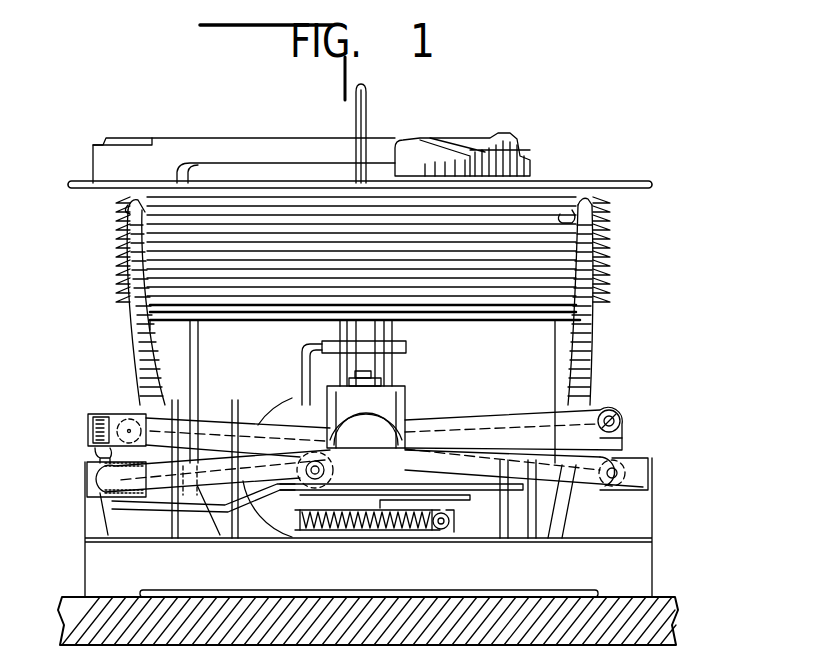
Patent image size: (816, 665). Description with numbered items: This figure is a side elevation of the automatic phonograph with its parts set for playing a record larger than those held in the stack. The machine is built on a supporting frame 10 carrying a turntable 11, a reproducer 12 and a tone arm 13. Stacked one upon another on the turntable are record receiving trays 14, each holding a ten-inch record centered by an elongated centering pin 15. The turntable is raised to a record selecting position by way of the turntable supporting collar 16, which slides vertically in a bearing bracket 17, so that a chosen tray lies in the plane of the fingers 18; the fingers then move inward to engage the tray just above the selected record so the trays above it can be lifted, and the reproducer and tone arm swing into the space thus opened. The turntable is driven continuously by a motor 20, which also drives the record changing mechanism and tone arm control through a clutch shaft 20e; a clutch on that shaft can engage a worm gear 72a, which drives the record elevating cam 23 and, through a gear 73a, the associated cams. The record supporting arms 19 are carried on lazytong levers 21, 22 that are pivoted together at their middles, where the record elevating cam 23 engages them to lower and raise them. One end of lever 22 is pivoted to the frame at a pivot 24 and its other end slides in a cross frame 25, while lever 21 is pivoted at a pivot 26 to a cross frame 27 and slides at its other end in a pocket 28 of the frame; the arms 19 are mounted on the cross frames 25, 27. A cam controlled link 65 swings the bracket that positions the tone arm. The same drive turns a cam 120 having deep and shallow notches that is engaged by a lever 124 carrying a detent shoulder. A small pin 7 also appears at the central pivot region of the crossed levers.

The supporting frame 10 is at (648, 562).
The turntable 11 is at (480, 318).
The reproducer 12 is at (524, 152).
The tone arm 13 is at (292, 142).
The record receiving trays 14 is at (598, 242).
The centering pin 15 is at (352, 175).
The turntable supporting collar 16 is at (388, 366).
The bearing bracket 17 is at (406, 347).
The fingers 18 is at (150, 213).
The record supporting arms 19 is at (140, 343).
The motor 20 is at (290, 400).
The lazytong lever 21 is at (470, 428).
The lazytong lever 22 is at (178, 424).
The record elevating cam 23 is at (410, 402).
The pivot 24 is at (618, 468).
The cross frame 25 is at (118, 416).
The pivot 26 is at (620, 410).
The cross frame 27 is at (616, 440).
The pocket 28 is at (112, 481).
The cam controlled link 65 is at (110, 505).
The pin 7 is at (312, 463).
The cam 120 is at (374, 514).
The lever 124 is at (470, 502).
The gear 73a is at (347, 528).
The worm gear 72a is at (440, 530).
The clutch shaft 20e is at (449, 527).